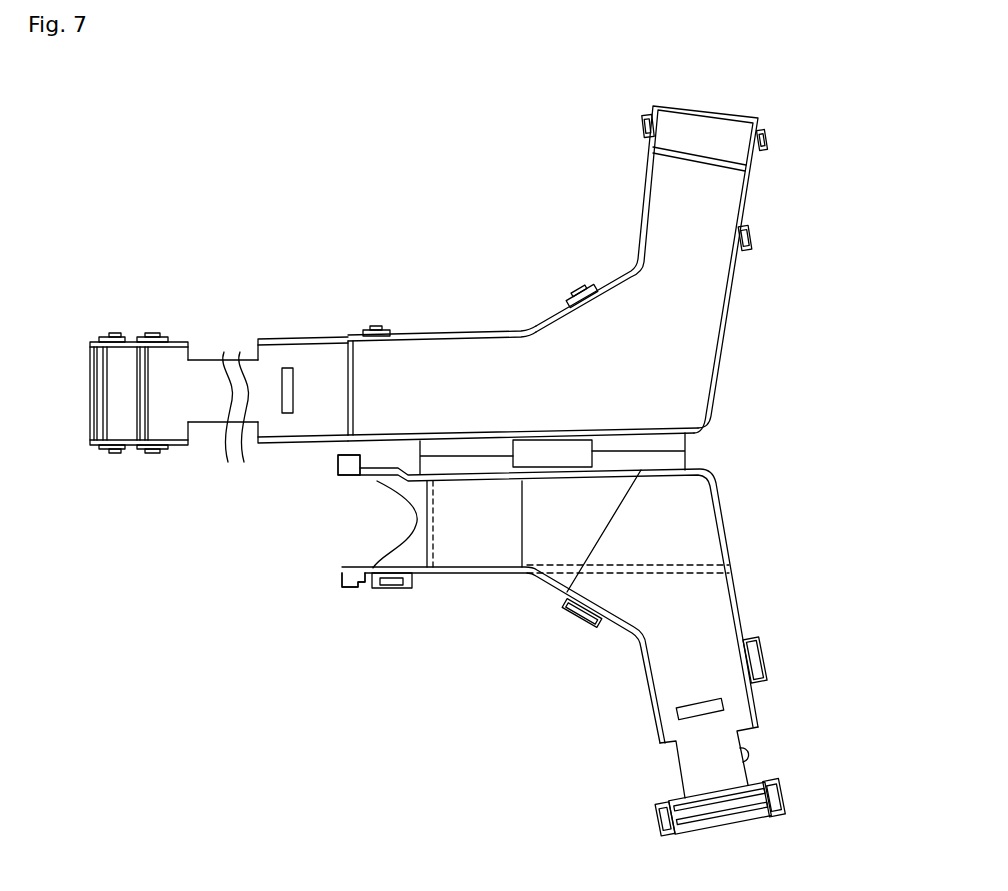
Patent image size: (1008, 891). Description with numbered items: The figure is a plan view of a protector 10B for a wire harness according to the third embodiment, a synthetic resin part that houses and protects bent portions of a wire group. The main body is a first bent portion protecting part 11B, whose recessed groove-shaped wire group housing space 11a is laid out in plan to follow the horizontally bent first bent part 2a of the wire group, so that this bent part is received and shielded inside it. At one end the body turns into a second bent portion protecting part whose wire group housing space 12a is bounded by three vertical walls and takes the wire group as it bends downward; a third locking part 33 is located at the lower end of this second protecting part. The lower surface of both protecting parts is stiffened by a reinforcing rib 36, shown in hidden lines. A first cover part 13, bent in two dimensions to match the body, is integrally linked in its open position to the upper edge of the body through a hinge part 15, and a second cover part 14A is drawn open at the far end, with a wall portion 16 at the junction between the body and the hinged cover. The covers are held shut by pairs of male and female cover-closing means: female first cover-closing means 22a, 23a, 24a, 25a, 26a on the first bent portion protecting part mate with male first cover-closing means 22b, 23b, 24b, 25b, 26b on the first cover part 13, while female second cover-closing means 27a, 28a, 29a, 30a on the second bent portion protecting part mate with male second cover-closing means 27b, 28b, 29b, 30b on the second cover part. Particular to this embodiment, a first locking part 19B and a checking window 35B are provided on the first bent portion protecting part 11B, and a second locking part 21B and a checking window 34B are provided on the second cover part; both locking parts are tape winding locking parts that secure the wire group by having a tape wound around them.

The protector 10B is at (409, 174).
The first bent part 2a is at (722, 520).
The wire group housing space 11a is at (705, 550).
The first bent portion protecting part 11B is at (606, 670).
The wire group housing space 12a is at (405, 525).
The first cover part 13 is at (682, 335).
The body portion 14A is at (273, 339).
The hinge part 15 is at (476, 463).
The partition wall 16 is at (353, 378).
The first locking part 19B is at (743, 772).
The second locking part 21B is at (220, 433).
The female first cover-closing means 22a is at (785, 797).
The male first cover-closing means 22b is at (767, 140).
The female first cover-closing means 23a is at (765, 658).
The male first cover-closing means 23b is at (752, 245).
The female first cover-closing means 24a is at (660, 822).
The male first cover-closing means 24b is at (643, 122).
The female first cover-closing means 25a is at (573, 607).
The male first cover-closing means 25b is at (585, 288).
The female first cover-closing means 26a is at (388, 590).
The male first cover-closing means 26b is at (376, 326).
The female second cover-closing means 27a is at (355, 588).
The female second cover-closing means 28a is at (353, 580).
The male second cover-closing means 27b is at (112, 333).
The male second cover-closing means 28b is at (150, 333).
The female second cover-closing means 29a is at (347, 457).
The female second cover-closing means 30a is at (349, 465).
The male second cover-closing means 29b is at (107, 453).
The male second cover-closing means 30b is at (150, 453).
The third locking part 33 is at (415, 557).
The checking window 34B is at (292, 400).
The checking window 35B is at (710, 690).
The reinforcing rib 36 is at (700, 573).